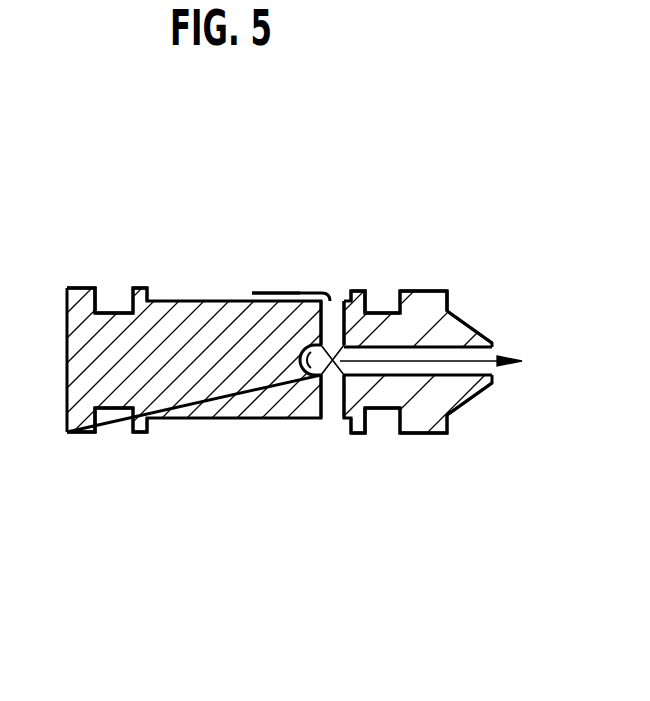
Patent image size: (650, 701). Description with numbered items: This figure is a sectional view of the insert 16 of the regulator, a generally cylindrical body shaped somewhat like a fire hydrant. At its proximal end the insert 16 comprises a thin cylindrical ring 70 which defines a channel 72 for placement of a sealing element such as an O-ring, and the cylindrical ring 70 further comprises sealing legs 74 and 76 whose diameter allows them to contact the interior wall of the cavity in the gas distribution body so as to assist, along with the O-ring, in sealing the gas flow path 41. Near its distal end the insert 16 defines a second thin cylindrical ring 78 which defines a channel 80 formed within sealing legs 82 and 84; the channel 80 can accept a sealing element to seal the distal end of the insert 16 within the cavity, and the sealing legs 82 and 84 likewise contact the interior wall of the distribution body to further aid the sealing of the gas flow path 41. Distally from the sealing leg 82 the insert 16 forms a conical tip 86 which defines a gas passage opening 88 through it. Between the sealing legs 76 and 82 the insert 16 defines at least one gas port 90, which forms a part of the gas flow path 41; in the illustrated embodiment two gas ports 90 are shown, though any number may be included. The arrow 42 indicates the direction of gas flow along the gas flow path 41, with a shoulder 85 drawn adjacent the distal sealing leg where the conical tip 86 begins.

The insert 16 is at (215, 312).
The gas flow path 41 is at (242, 290).
The arrow 42 is at (302, 292).
The thin cylindrical ring 70 is at (150, 212).
The channel 72 is at (120, 288).
The sealing leg 74 is at (80, 288).
The sealing leg 76 is at (138, 287).
The second thin cylindrical ring 78 is at (448, 243).
The channel 80 is at (383, 300).
The sealing leg 82 is at (363, 291).
The sealing leg 84 is at (442, 289).
The shoulder 85 is at (450, 296).
The conical tip 86 is at (470, 325).
The gas passage opening 88 is at (497, 350).
The gas port 90 is at (340, 300).